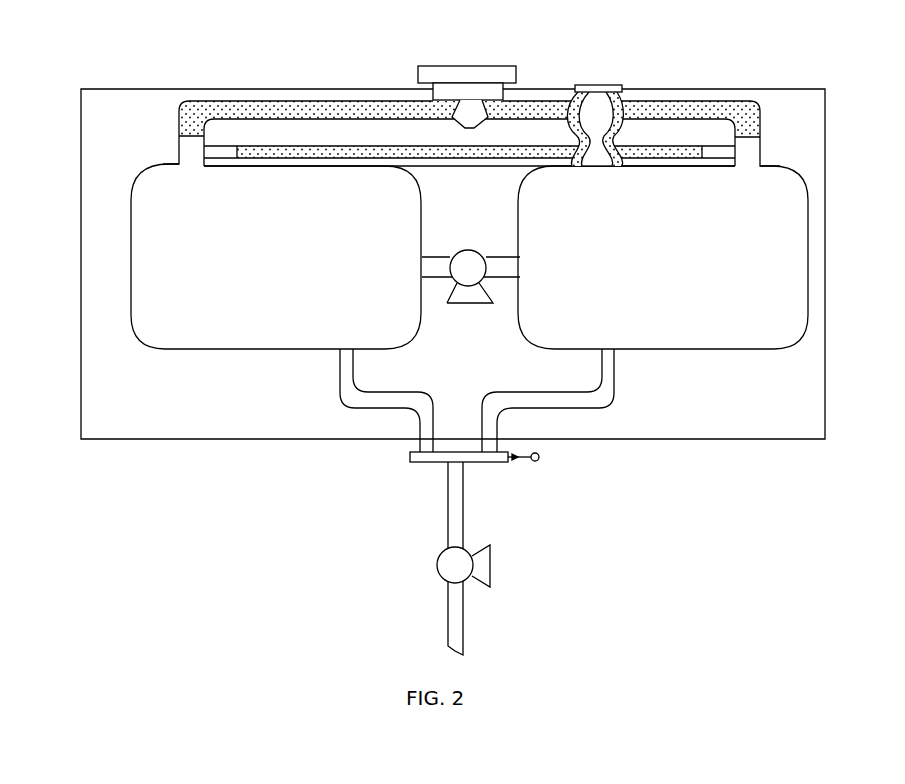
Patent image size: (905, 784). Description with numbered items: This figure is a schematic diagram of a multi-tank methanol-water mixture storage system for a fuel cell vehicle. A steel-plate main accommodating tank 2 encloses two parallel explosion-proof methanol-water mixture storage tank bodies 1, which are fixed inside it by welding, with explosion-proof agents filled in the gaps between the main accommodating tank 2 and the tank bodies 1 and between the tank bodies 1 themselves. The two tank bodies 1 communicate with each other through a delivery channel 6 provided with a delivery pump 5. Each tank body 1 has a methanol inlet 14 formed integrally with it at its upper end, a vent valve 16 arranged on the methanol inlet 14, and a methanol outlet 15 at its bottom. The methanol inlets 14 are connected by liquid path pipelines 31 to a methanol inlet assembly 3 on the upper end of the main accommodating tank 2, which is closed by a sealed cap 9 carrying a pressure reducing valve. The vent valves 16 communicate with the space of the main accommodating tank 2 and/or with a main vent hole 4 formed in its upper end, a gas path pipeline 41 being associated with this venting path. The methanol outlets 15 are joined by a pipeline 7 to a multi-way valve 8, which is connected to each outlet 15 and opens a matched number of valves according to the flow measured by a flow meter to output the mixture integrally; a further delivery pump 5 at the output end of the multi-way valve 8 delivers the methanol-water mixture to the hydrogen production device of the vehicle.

The explosion-proof methanol-water mixture storage tank body 1 is at (140, 268).
The main accommodating tank 2 is at (90, 107).
The methanol inlet assembly 3 is at (453, 90).
The main vent hole 4 is at (600, 86).
The delivery pump 5 is at (468, 250).
The delivery channel 6 is at (436, 268).
The pipeline 7 is at (428, 406).
The multi-way valve 8 is at (436, 455).
The sealed cap 9 is at (492, 72).
The methanol inlet 14 is at (183, 156).
The methanol outlet 15 is at (343, 352).
The vent valve 16 is at (230, 157).
The liquid path pipeline 31 is at (593, 167).
The gas path pipeline 41 is at (470, 122).